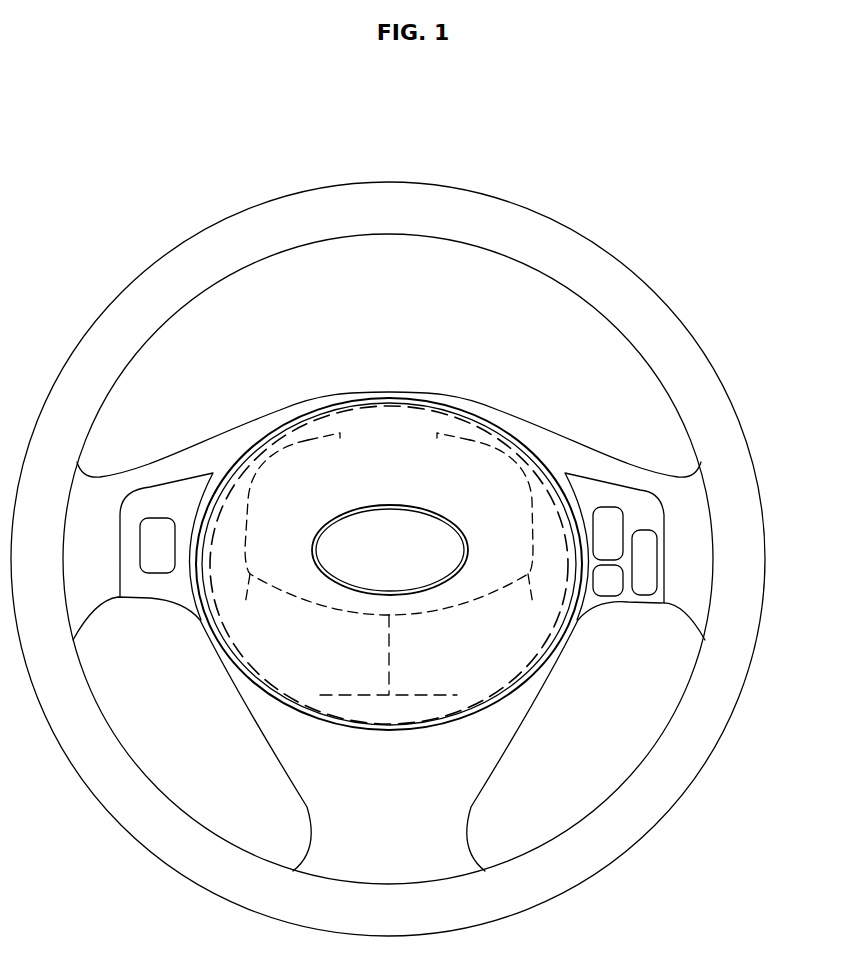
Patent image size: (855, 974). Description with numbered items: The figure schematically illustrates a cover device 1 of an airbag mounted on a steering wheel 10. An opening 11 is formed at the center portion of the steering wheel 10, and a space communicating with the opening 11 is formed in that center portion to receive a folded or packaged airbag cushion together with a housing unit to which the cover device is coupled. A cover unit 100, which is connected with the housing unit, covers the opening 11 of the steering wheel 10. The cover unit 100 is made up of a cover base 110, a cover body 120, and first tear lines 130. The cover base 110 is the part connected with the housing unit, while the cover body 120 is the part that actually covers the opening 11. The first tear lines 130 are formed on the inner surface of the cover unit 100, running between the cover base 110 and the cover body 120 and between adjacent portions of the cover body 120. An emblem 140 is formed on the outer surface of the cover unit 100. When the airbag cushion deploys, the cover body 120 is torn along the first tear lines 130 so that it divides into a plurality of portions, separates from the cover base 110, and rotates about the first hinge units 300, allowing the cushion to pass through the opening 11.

The cover device 1 is at (507, 713).
The steering wheel 10 is at (690, 508).
The opening 11 is at (540, 463).
The cover unit 100 is at (584, 555).
The cover base 110 is at (553, 533).
The cover body 120 is at (493, 480).
The first tear lines 130 is at (308, 442).
The emblem 140 is at (330, 543).
The first hinge units 300 is at (381, 436).